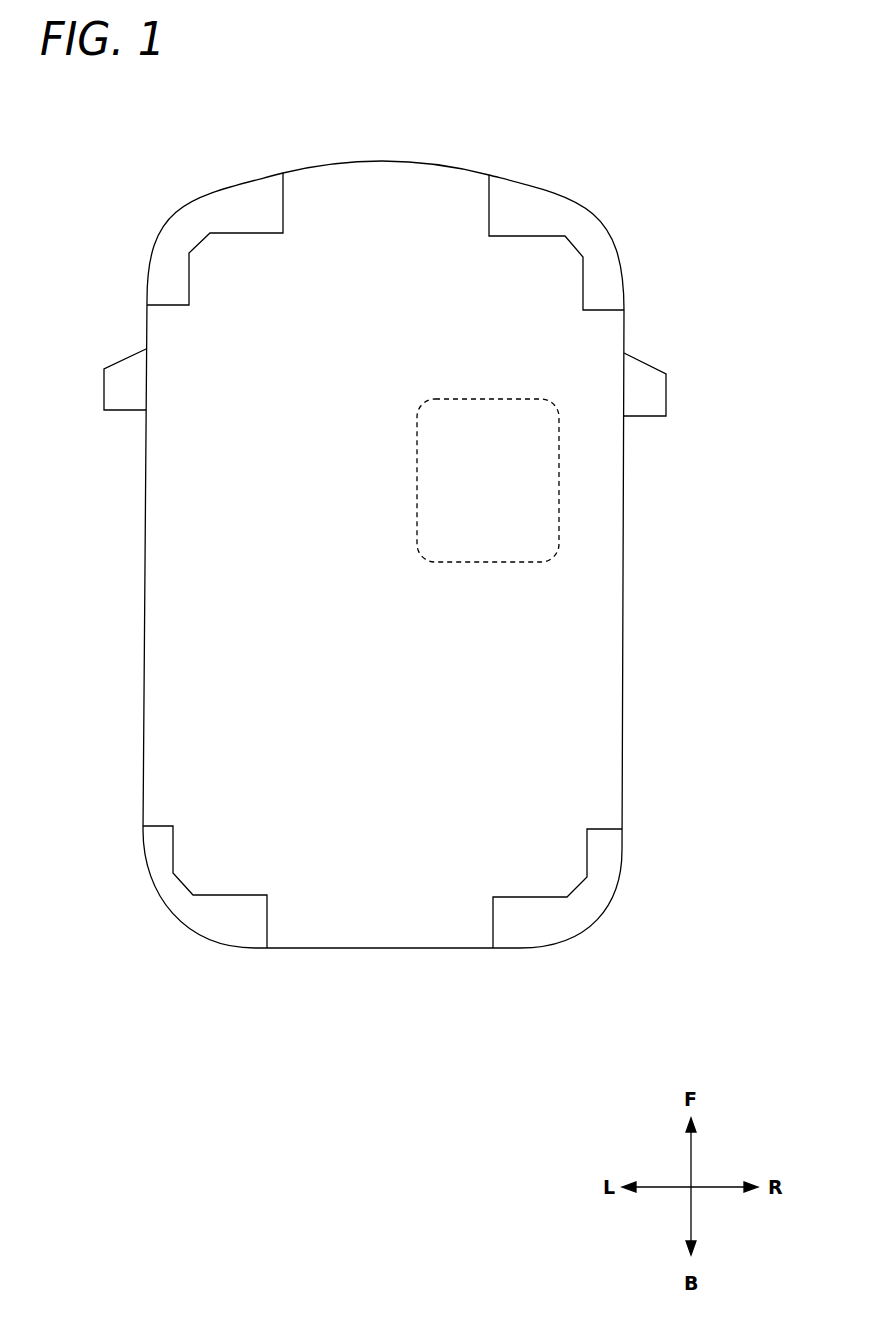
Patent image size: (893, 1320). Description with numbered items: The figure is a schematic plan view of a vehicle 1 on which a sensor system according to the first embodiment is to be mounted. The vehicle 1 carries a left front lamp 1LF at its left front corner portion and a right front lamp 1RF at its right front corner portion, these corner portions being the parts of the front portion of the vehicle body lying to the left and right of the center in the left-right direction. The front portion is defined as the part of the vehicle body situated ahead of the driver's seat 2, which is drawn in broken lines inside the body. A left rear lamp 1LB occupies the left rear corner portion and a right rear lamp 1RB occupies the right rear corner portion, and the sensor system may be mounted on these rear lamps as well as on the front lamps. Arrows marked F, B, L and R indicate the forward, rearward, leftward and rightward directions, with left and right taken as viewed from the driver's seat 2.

The vehicle 1 is at (597, 622).
The left front lamp 1LF is at (197, 217).
The right front lamp 1RF is at (552, 207).
The left rear lamp 1LB is at (188, 918).
The right rear lamp 1RB is at (583, 912).
The driver's seat 2 is at (560, 505).